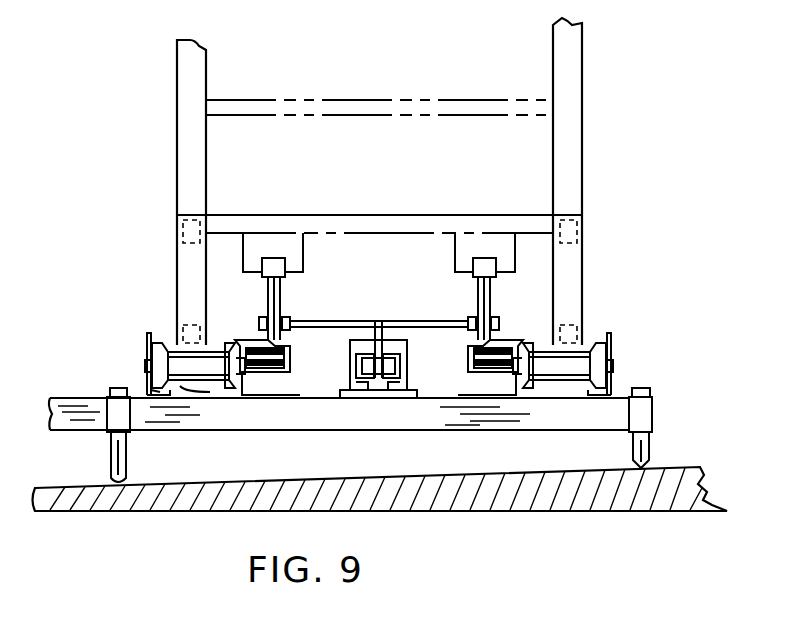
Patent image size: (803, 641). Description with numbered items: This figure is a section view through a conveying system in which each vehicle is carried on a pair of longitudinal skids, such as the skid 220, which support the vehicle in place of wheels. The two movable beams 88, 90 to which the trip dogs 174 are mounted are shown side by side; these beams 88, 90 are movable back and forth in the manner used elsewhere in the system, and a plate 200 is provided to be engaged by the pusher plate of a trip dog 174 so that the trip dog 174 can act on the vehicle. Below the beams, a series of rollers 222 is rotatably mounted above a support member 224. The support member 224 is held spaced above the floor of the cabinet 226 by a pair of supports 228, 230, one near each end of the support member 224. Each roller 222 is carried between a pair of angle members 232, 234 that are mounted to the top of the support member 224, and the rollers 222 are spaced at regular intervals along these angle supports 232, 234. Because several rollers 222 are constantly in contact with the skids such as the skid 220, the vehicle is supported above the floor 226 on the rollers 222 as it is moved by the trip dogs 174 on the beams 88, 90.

The beam 88 is at (289, 343).
The beam 90 is at (473, 343).
The trip dog 174 is at (291, 289).
The plate 200 is at (303, 252).
The longitudinal skid 220 is at (182, 321).
The roller 222 is at (195, 389).
The support member 224 is at (268, 431).
The floor of the cabinet 226 is at (305, 477).
The support 228 is at (107, 456).
The support 230 is at (652, 452).
The angle member 232 is at (147, 380).
The angle member 234 is at (247, 386).